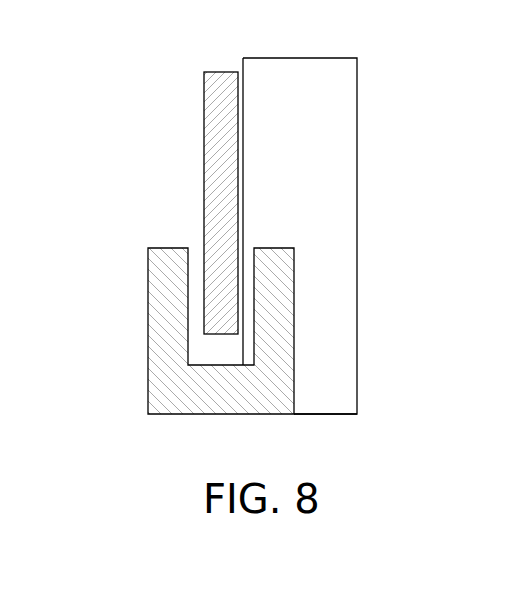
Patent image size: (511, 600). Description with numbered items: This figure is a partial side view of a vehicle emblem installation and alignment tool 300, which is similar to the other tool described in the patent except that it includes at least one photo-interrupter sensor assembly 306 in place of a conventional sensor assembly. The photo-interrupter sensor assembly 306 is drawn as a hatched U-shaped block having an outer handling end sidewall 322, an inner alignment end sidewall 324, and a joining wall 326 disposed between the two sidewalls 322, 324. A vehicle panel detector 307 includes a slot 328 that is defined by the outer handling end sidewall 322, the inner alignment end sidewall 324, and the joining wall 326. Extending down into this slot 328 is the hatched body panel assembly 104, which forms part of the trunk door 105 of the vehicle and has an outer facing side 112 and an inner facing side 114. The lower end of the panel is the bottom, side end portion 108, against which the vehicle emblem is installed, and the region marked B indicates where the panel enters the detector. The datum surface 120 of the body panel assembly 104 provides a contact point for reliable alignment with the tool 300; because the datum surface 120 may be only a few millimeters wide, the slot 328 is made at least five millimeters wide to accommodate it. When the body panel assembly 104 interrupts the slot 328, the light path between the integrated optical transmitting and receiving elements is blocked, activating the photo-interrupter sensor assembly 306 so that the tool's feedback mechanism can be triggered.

The tool 300 is at (361, 232).
The slot 328 is at (307, 211).
The vehicle panel detector 307 is at (251, 272).
The joining wall 326 is at (288, 415).
The body panel assembly 104 is at (180, 177).
The trunk door 105 is at (180, 177).
The inner facing side 114 is at (227, 203).
The outer facing side 112 is at (239, 88).
The bottom, side end portion 108 is at (193, 301).
The region B is at (207, 324).
The photo-interrupter sensor assembly 306 is at (207, 355).
The outer handling end sidewall 322 is at (207, 355).
The inner alignment end sidewall 324 is at (180, 355).
The datum surface 120 is at (220, 335).